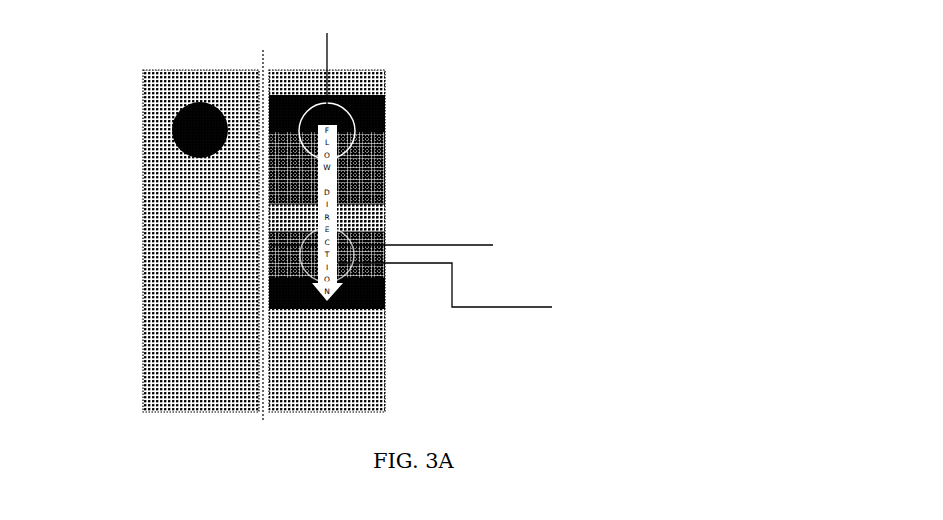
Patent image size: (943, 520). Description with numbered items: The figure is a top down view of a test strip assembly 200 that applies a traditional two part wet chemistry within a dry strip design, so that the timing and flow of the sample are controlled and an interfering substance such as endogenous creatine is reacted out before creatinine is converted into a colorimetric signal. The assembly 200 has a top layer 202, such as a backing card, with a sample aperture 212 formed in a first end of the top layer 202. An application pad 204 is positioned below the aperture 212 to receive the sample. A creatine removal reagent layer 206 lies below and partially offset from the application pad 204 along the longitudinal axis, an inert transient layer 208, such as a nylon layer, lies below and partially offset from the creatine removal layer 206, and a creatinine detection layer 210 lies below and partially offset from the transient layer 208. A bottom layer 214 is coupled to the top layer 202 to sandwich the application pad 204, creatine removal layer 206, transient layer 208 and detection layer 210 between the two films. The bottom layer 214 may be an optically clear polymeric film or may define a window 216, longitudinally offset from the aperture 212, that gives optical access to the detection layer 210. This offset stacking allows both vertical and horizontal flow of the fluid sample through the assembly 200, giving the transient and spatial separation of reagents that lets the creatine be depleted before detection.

The test strip assembly 200 is at (762, 59).
The top layer 202 is at (201, 241).
The application pad 204 is at (385, 105).
The creatine removal reagent layer 206 is at (372, 152).
The inert transient layer 208 is at (385, 213).
The creatinine detection layer 210 is at (385, 292).
The sample aperture 212 is at (176, 113).
The bottom layer 214 is at (513, 430).
The window 216 is at (316, 262).